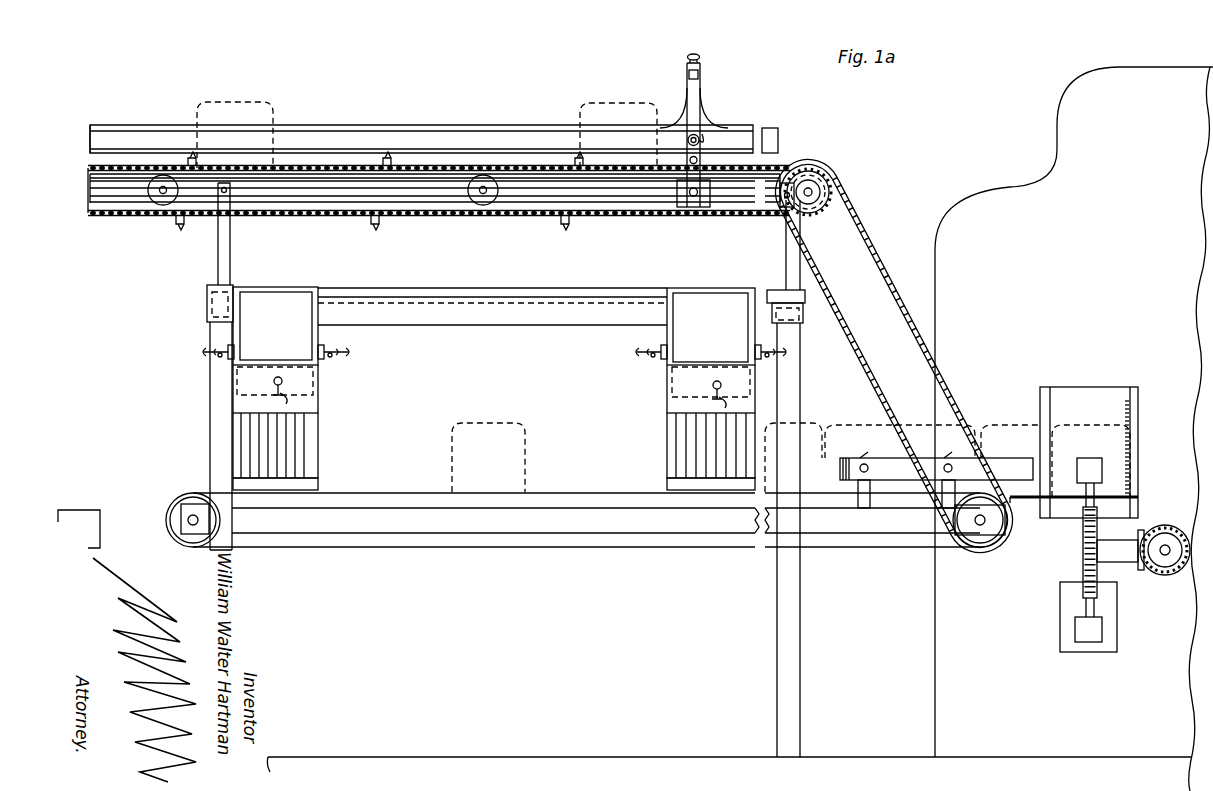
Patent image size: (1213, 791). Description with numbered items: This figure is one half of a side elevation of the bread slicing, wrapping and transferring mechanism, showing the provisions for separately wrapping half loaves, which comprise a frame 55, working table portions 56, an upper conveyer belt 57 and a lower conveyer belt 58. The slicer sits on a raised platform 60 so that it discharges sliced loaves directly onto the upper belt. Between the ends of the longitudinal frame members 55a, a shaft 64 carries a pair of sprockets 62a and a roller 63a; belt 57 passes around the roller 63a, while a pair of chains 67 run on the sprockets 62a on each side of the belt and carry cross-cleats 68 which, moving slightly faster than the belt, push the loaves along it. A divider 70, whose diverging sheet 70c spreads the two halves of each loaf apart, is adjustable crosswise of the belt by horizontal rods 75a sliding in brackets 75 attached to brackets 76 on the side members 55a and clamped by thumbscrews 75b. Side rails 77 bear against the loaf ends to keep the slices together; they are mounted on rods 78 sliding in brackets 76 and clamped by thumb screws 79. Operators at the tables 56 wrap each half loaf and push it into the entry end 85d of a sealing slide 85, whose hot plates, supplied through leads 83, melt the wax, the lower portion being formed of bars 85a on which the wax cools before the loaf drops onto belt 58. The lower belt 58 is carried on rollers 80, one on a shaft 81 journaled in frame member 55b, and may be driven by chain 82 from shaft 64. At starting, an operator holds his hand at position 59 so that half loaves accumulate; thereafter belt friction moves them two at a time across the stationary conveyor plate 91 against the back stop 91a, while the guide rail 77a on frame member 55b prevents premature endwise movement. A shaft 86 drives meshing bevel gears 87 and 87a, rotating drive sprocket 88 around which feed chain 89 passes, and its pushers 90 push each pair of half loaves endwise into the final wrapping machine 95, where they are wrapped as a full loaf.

The frame 55 is at (206, 386).
The longitudinal frame members 55a is at (122, 190).
The frame member 55b is at (491, 528).
The working surface or table portions 56 is at (456, 287).
The upper conveyer belt 57 is at (331, 173).
The lower conveyer belt 58 is at (592, 492).
The position 59 is at (1017, 440).
The platform 60 is at (79, 510).
The sprockets 62a is at (810, 168).
The roller 63a is at (832, 172).
The shaft 64 is at (820, 190).
The chains 67 is at (534, 166).
The cross-cleats 68 is at (193, 158).
The divider 70 is at (464, 127).
The sheet 70c is at (432, 130).
The brackets 75 is at (701, 103).
The horizontal rods 75a is at (700, 76).
The thumbscrews 75b is at (695, 55).
The brackets 76 is at (684, 208).
The side rails or guides 77 is at (304, 126).
The guide rail 77a is at (906, 470).
The horizontally extending rods 78 is at (683, 118).
The thumb screws 79 is at (704, 141).
The rollers 80 is at (195, 500).
The shaft 81 is at (1005, 529).
The chain 82 is at (901, 292).
The leads 83 is at (205, 352).
The sealing slide 85 is at (325, 377).
The bars 85a is at (277, 470).
The entry end 85d is at (271, 310).
The shaft 86 is at (1167, 550).
The bevel gear 87 is at (1161, 574).
The bevel gear 87a is at (1141, 566).
The drive sprocket 88 is at (1084, 566).
The feed chain 89 is at (1080, 593).
The pushers 90 is at (1097, 470).
The stationary conveyor plate 91 is at (1118, 496).
The back stop 91a is at (1134, 426).
The final wrapping machine 95 is at (1008, 183).